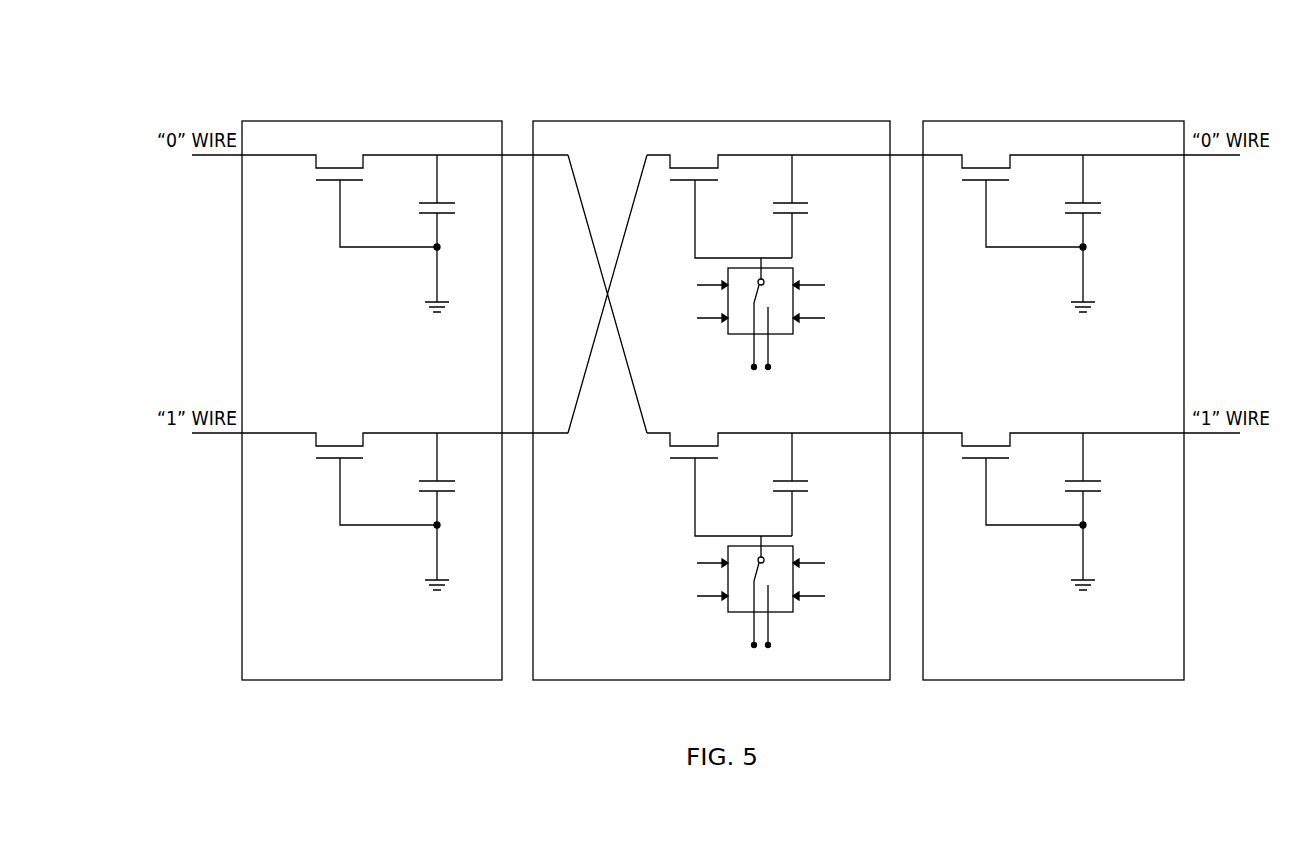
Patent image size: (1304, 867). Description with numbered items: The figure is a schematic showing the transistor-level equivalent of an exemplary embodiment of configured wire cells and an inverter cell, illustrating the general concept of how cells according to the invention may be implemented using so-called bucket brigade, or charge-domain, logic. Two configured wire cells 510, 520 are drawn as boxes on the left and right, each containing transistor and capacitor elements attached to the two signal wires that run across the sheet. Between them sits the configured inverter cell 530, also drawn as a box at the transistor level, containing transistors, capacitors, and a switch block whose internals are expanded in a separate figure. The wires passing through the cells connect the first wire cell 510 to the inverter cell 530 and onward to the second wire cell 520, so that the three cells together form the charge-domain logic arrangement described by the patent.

The wire cell 510 is at (322, 121).
The wire cell 520 is at (1048, 121).
The inverter cell 530 is at (665, 121).